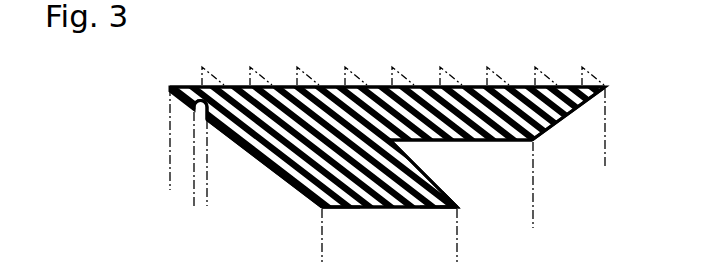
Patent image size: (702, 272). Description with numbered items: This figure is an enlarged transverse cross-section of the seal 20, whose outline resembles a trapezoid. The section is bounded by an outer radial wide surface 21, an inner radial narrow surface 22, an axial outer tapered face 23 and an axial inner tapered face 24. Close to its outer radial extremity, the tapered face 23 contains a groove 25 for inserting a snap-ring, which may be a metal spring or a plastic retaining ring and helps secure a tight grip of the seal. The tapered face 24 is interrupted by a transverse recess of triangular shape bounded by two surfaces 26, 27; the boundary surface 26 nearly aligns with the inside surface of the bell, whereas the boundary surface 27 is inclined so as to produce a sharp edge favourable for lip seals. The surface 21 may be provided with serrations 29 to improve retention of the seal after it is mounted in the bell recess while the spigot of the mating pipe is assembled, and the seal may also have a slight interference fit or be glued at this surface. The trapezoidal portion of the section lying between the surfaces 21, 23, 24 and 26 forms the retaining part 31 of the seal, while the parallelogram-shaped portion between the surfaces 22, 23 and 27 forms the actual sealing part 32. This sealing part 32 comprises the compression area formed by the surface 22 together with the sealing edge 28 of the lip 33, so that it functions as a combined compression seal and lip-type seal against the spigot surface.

The seal 20 is at (285, 112).
The outer radial wide surface 21 is at (379, 86).
The inner radial narrow surface 22 is at (378, 209).
The axial outer tapered face 23 is at (273, 173).
The axial inner tapered face 24 is at (569, 110).
The groove 25 is at (200, 100).
The boundary surface 26 is at (492, 141).
The boundary surface 27 is at (428, 177).
The sealing edge 28 is at (462, 209).
The serrations 29 is at (582, 74).
The retaining part 31 is at (468, 93).
The sealing part 32 is at (352, 170).
The lip 33 is at (436, 206).